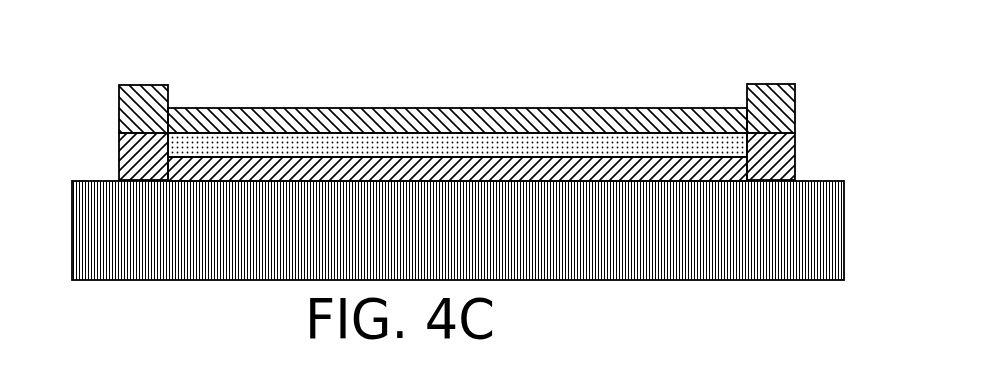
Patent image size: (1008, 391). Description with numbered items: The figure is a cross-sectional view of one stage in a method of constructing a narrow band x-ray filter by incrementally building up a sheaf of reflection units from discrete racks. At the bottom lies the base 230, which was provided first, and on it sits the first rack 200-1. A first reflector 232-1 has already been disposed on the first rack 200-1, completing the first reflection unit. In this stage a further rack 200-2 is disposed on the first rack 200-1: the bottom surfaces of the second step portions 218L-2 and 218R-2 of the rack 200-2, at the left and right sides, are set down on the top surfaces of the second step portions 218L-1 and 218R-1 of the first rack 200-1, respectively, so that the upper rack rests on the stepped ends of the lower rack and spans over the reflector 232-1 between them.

The second step portion 218L-2 is at (141, 78).
The second step portion 218L-1 is at (105, 154).
The first reflector 232-1 is at (400, 147).
The first rack 200-1 is at (540, 165).
The rack 200-2 is at (492, 113).
The base 230 is at (725, 255).
The second step portion 218R-2 is at (774, 74).
The second step portion 218R-1 is at (809, 145).